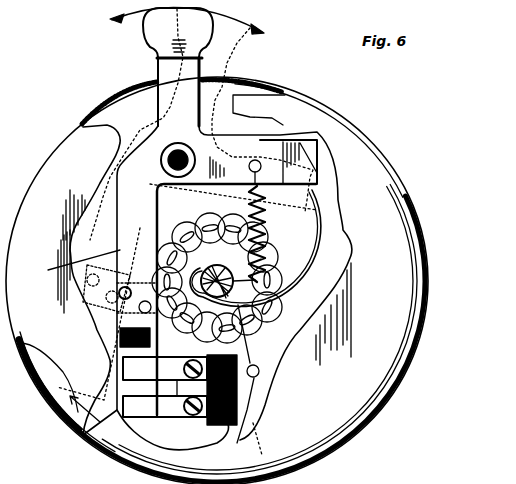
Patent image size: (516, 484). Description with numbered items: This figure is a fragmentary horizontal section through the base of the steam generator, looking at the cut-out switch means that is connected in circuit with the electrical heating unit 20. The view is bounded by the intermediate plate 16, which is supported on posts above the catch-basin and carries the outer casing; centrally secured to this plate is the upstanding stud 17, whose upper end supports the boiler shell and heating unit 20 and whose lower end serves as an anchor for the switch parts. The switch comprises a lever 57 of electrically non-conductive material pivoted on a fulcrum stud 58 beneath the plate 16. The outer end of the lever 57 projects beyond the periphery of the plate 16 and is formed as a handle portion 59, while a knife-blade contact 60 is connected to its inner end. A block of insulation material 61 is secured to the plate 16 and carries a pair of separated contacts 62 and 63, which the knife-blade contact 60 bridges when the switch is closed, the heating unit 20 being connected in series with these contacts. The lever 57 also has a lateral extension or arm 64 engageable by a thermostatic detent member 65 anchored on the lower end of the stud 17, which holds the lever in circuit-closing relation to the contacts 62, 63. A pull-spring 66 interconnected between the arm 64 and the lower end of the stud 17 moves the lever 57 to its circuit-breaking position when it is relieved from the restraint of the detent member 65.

The intermediate plate 16 is at (390, 220).
The stud 17 is at (222, 270).
The electrical heating unit 20 is at (215, 228).
The lever 57 is at (188, 265).
The fulcrum stud 58 is at (180, 177).
The handle portion 59 is at (155, 23).
The knife-blade contact 60 is at (86, 430).
The block of insulation material 61 is at (227, 423).
The contact 62 is at (166, 357).
The contact 63 is at (176, 409).
The lateral extension or arm 64 is at (268, 150).
The thermostatic detent member 65 is at (308, 262).
The pull-spring 66 is at (266, 231).